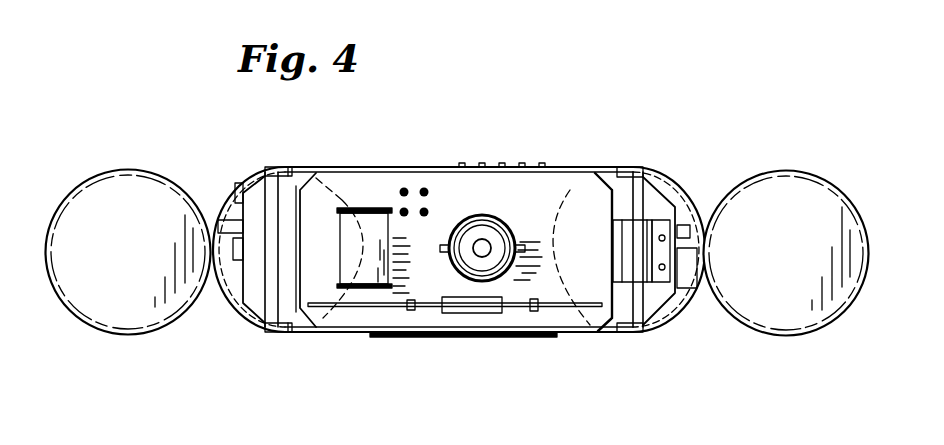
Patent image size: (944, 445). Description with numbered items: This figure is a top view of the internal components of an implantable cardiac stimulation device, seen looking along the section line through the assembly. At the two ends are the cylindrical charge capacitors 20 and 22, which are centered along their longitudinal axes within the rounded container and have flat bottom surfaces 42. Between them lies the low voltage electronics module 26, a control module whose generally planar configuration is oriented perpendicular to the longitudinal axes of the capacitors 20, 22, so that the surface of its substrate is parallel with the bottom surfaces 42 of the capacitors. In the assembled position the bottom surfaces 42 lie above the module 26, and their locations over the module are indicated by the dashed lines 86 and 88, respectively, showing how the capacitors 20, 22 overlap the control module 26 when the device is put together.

The charge capacitor 20 is at (778, 170).
The charge capacitor 22 is at (122, 167).
The flat bottom surface 42 is at (87, 287).
The low voltage electronics module 26 is at (572, 338).
The dashed line 86 is at (570, 190).
The dashed line 88 is at (342, 200).